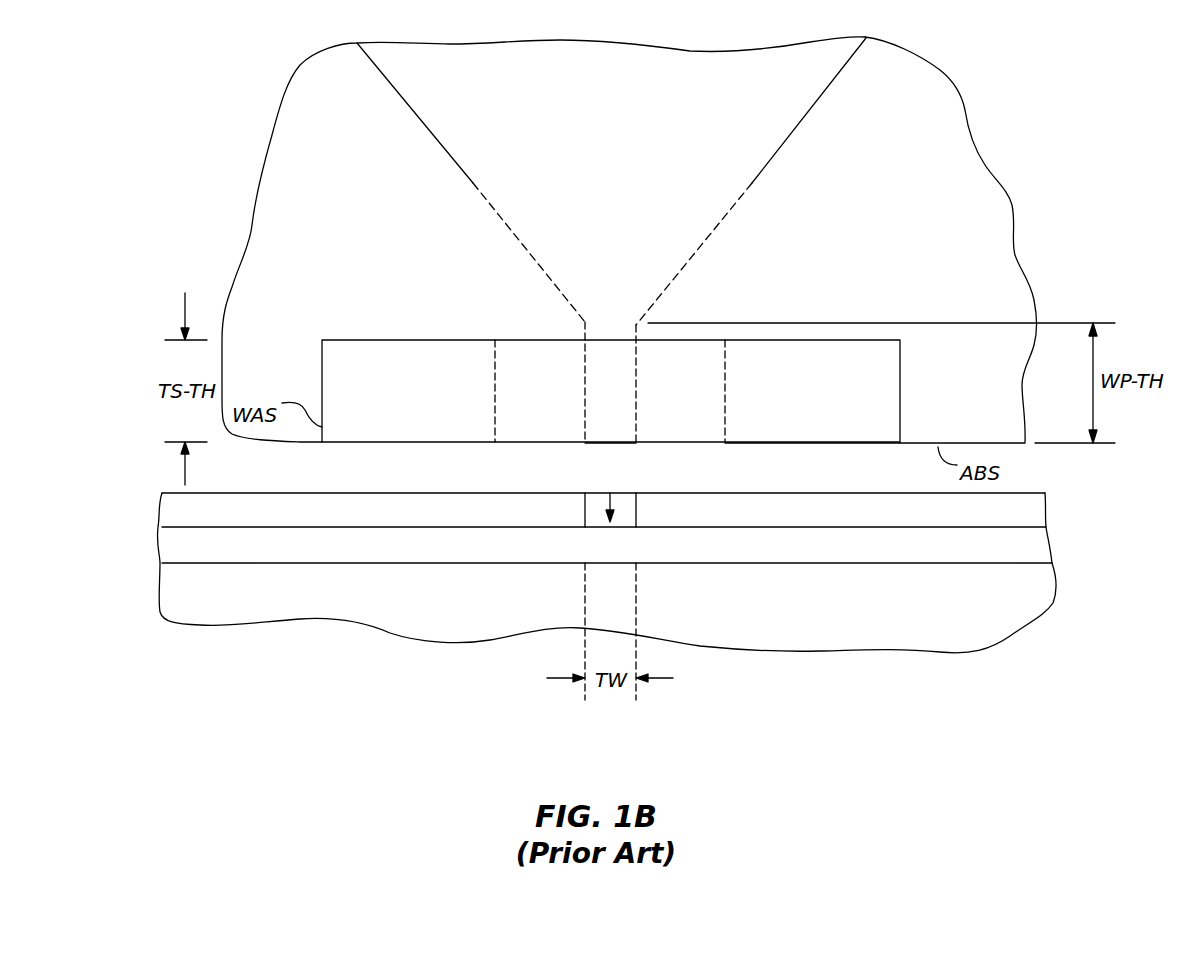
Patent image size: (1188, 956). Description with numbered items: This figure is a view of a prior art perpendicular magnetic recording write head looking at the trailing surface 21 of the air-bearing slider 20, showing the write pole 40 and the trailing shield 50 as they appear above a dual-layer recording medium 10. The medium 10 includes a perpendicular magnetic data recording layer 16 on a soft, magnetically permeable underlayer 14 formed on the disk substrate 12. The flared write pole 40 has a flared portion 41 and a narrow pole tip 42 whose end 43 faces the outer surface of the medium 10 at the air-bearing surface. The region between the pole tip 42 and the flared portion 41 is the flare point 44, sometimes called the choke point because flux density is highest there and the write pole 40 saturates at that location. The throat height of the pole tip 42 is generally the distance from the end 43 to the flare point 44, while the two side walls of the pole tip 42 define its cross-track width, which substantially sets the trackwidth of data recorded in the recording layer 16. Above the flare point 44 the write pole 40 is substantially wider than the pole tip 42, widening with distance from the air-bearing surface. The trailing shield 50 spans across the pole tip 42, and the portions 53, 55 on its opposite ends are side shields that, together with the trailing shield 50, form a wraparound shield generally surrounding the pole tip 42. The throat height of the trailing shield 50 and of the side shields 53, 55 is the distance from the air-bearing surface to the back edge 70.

The medium 10 is at (636, 595).
The disk substrate 12 is at (1047, 582).
The soft underlayer 14 is at (1042, 548).
The recording layer 16 is at (1035, 510).
The air-bearing slider 20 is at (963, 107).
The trailing surface 21 is at (902, 62).
The write pole 40 is at (670, 60).
The flared portion 41 is at (658, 260).
The pole tip 42 is at (602, 423).
The end 43 is at (608, 443).
The flare point 44 is at (583, 322).
The trailing shield 50 is at (687, 428).
The side shield 53 is at (823, 428).
The side shield 55 is at (423, 428).
The back edge 70 is at (817, 340).